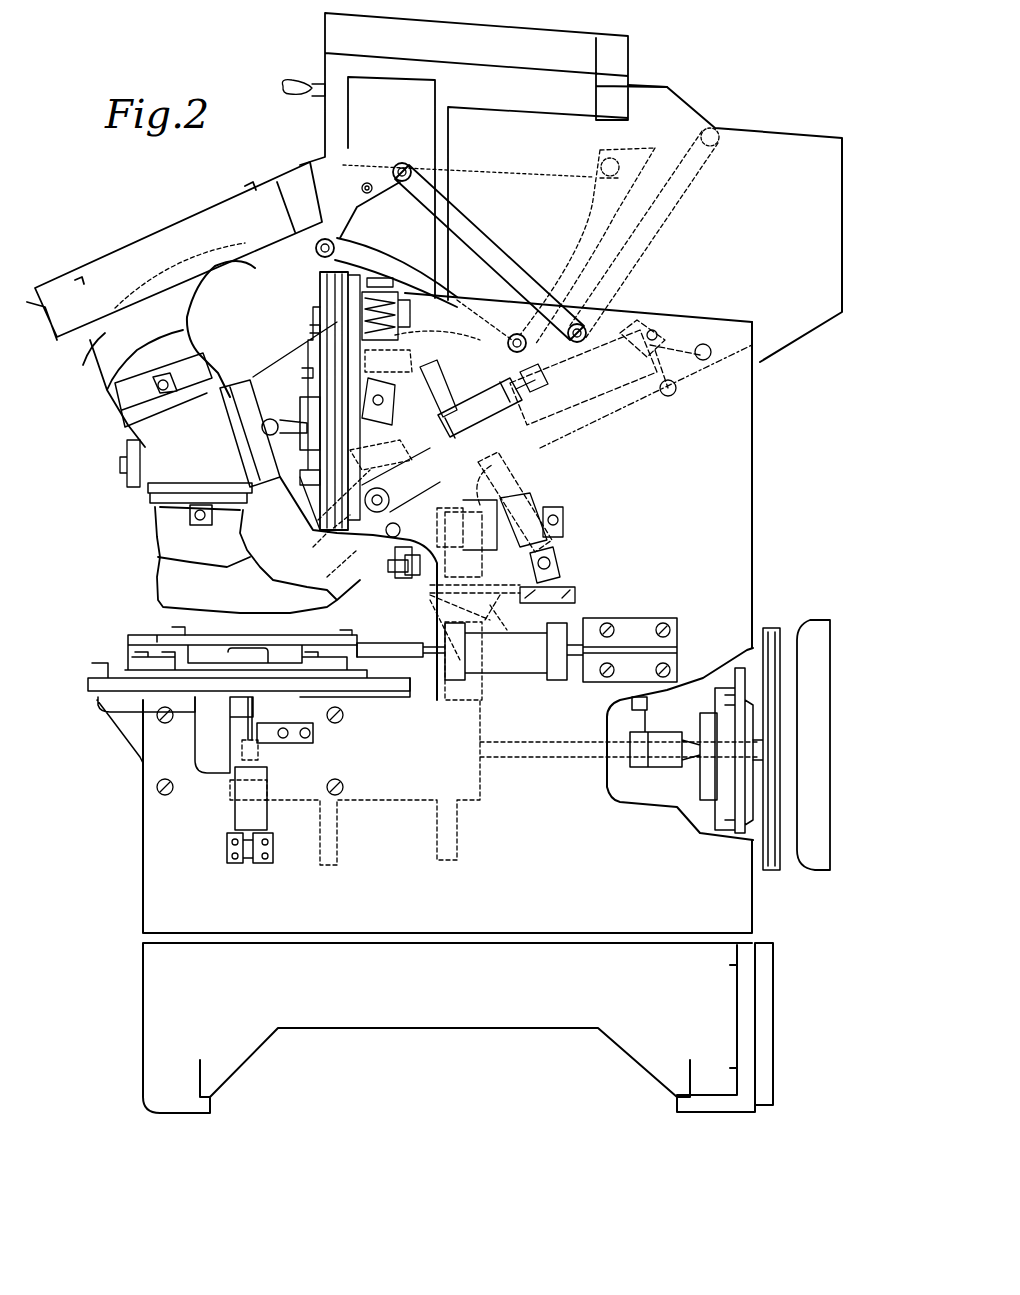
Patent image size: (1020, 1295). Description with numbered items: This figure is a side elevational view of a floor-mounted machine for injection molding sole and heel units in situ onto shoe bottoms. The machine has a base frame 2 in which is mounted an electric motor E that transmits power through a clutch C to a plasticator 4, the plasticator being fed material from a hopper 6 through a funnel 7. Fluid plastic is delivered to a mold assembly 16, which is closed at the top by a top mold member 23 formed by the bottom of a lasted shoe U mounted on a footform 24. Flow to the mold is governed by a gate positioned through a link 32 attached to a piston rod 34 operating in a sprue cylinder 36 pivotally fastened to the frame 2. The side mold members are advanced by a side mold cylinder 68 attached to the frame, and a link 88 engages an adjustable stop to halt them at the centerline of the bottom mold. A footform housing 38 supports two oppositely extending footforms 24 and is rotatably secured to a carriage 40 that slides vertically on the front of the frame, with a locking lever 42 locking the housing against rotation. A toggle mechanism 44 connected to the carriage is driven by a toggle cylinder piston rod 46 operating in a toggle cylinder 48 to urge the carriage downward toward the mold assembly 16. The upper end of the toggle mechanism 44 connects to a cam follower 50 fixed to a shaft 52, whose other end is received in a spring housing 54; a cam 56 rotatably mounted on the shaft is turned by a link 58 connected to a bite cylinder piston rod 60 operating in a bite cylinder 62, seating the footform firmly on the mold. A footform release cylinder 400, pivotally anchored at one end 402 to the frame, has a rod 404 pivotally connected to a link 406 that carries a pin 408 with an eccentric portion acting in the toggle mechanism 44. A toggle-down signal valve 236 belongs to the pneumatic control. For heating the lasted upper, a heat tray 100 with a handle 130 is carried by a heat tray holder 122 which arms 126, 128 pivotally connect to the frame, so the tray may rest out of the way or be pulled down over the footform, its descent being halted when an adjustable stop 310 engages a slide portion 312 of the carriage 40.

The heat tray 100 is at (325, 33).
The handle 130 is at (296, 80).
The heat tray holder 122 is at (313, 173).
The arm 126 is at (373, 253).
The arm 128 is at (463, 220).
The adjustable stop 310 is at (320, 263).
The slide portion 312 is at (327, 289).
The spring housing 54 is at (462, 296).
The shaft 52 is at (432, 340).
The cam 56 is at (447, 378).
The link 58 is at (396, 401).
The toggle cylinder piston rod 46 is at (500, 437).
The bite cylinder piston rod 60 is at (515, 392).
The toggle cylinder 48 is at (590, 392).
The hopper 6 is at (648, 418).
The cam follower 50 is at (365, 478).
The toggle mechanism 44 is at (402, 470).
The rod 404 is at (492, 470).
The footform release cylinder 400 is at (535, 490).
The bite cylinder 62 is at (550, 536).
The end 402 is at (567, 510).
The carriage 40 is at (283, 360).
The locking lever 42 is at (270, 419).
The footform housing 38 is at (135, 470).
The footform 24 is at (128, 392).
The lasted shoe U is at (98, 340).
The top mold member 23 is at (260, 545).
The pin 408 is at (313, 543).
The link 406 is at (318, 570).
The toggle-down signal valve 236 is at (388, 572).
The mold assembly 16 is at (110, 636).
The link 88 is at (175, 632).
The side mold cylinder 68 is at (522, 672).
The funnel 7 is at (477, 630).
The base frame 2 is at (742, 512).
The plasticator 4 is at (480, 795).
The link 32 is at (245, 722).
The piston rod 34 is at (250, 745).
The sprue cylinder 36 is at (240, 815).
The clutch C is at (708, 710).
The electric motor E is at (808, 640).